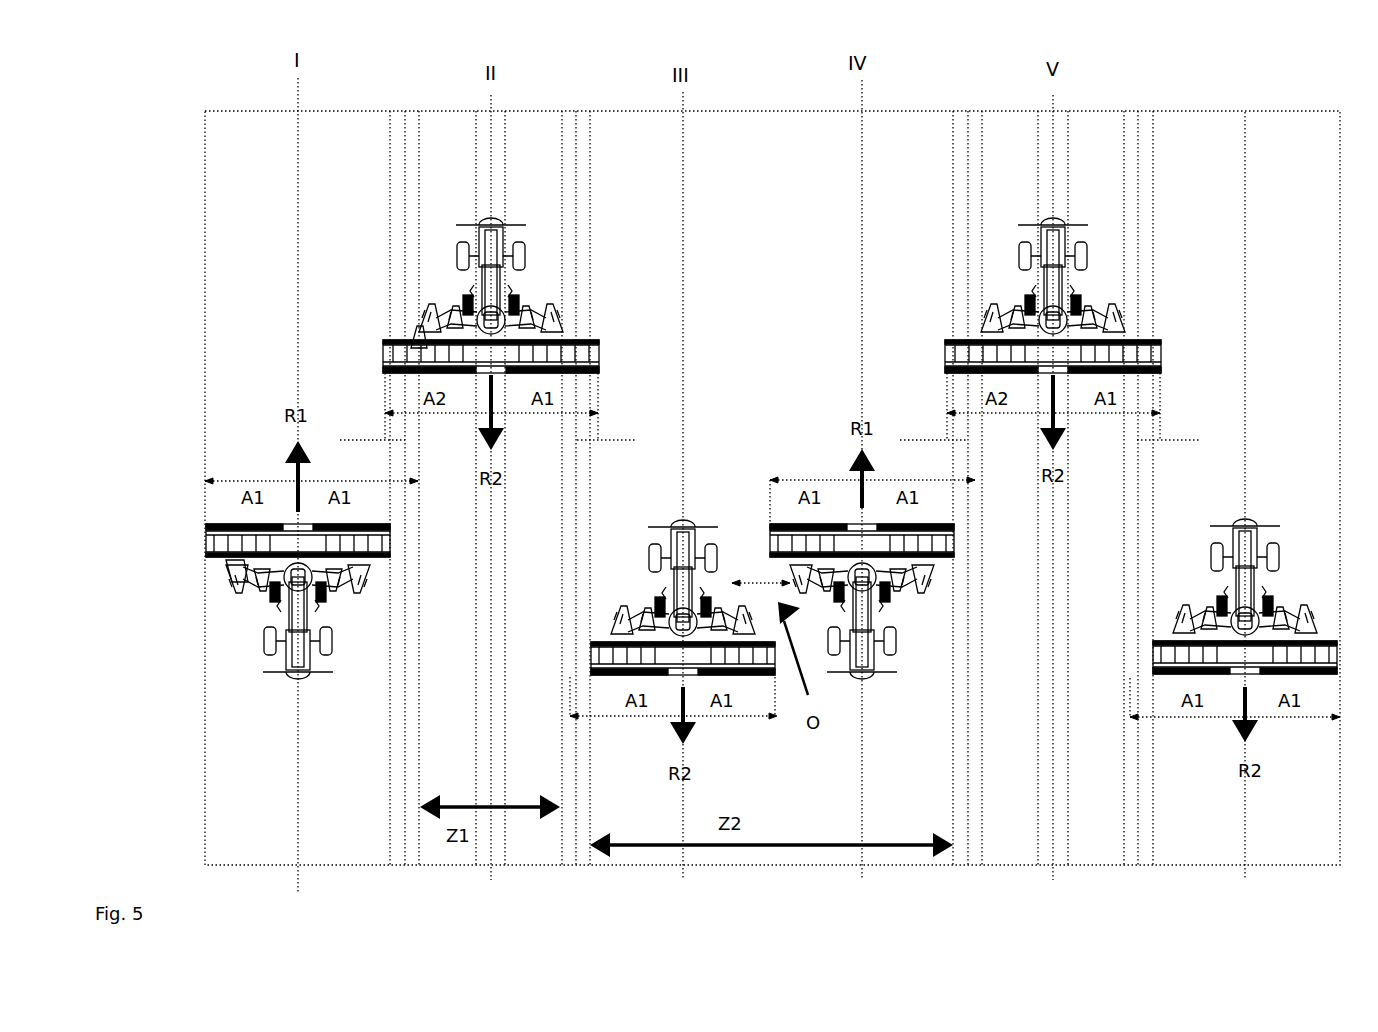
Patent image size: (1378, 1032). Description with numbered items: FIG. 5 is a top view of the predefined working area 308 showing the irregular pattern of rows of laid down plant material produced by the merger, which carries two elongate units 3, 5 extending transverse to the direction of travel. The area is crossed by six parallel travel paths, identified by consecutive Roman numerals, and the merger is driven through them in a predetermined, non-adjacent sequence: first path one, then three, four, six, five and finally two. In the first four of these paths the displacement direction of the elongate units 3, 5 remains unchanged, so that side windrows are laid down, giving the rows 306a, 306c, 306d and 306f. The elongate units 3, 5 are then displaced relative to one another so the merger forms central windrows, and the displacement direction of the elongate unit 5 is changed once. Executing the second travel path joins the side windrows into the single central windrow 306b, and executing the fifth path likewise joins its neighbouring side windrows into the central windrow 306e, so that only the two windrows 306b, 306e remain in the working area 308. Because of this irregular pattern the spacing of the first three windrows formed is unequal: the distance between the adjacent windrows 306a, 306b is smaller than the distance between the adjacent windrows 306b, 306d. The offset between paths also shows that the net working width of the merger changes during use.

The predefined working area 308 is at (205, 268).
The row of laid down plant material 306a is at (398, 170).
The row of laid down plant material 306b is at (486, 133).
The row of laid down plant material 306c is at (587, 128).
The row of laid down plant material 306d is at (977, 126).
The row of laid down plant material 306e is at (1063, 120).
The row of laid down plant material 306f is at (1153, 118).
The elongate unit 3 is at (205, 530).
The elongate unit 5 is at (363, 558).